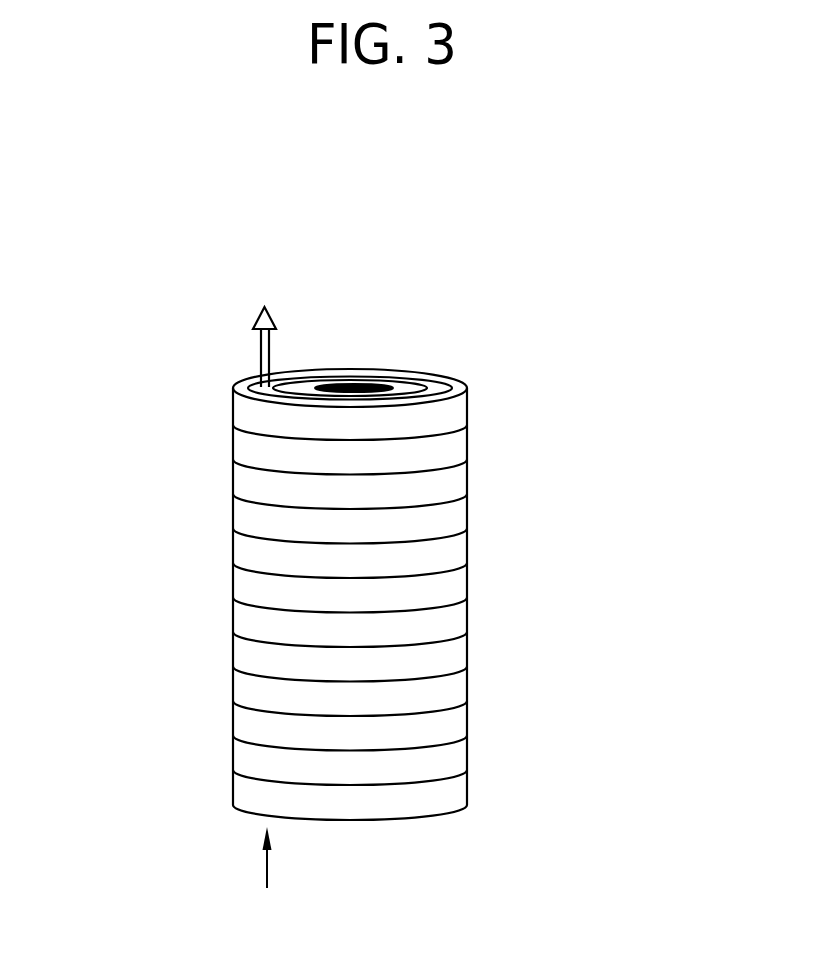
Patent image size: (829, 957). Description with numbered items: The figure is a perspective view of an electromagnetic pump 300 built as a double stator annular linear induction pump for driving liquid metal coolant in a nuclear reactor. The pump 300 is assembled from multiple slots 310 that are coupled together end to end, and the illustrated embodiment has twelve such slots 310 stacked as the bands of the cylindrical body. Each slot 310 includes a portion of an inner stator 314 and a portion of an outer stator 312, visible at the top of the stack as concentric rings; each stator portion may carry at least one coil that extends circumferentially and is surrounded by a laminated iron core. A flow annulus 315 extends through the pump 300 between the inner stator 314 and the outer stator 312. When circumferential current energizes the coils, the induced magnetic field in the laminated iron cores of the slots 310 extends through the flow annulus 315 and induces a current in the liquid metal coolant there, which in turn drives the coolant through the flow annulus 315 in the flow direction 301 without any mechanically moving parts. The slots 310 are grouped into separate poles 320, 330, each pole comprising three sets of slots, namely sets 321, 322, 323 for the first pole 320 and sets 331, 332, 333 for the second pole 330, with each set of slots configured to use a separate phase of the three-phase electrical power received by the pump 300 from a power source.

The electromagnetic pump 300 is at (173, 256).
The flow direction arrow 301 is at (259, 348).
The slot 310 is at (478, 730).
The outer stator 312 is at (339, 357).
The inner stator 314 is at (412, 375).
The flow annulus 315 is at (443, 378).
The pole 320 is at (702, 378).
The set of slots 321 is at (218, 585).
The set of slots 322 is at (218, 407).
The set of slots 323 is at (482, 475).
The pole 330 is at (702, 605).
The set of slots 331 is at (218, 783).
The set of slots 332 is at (218, 618).
The set of slots 333 is at (482, 683).